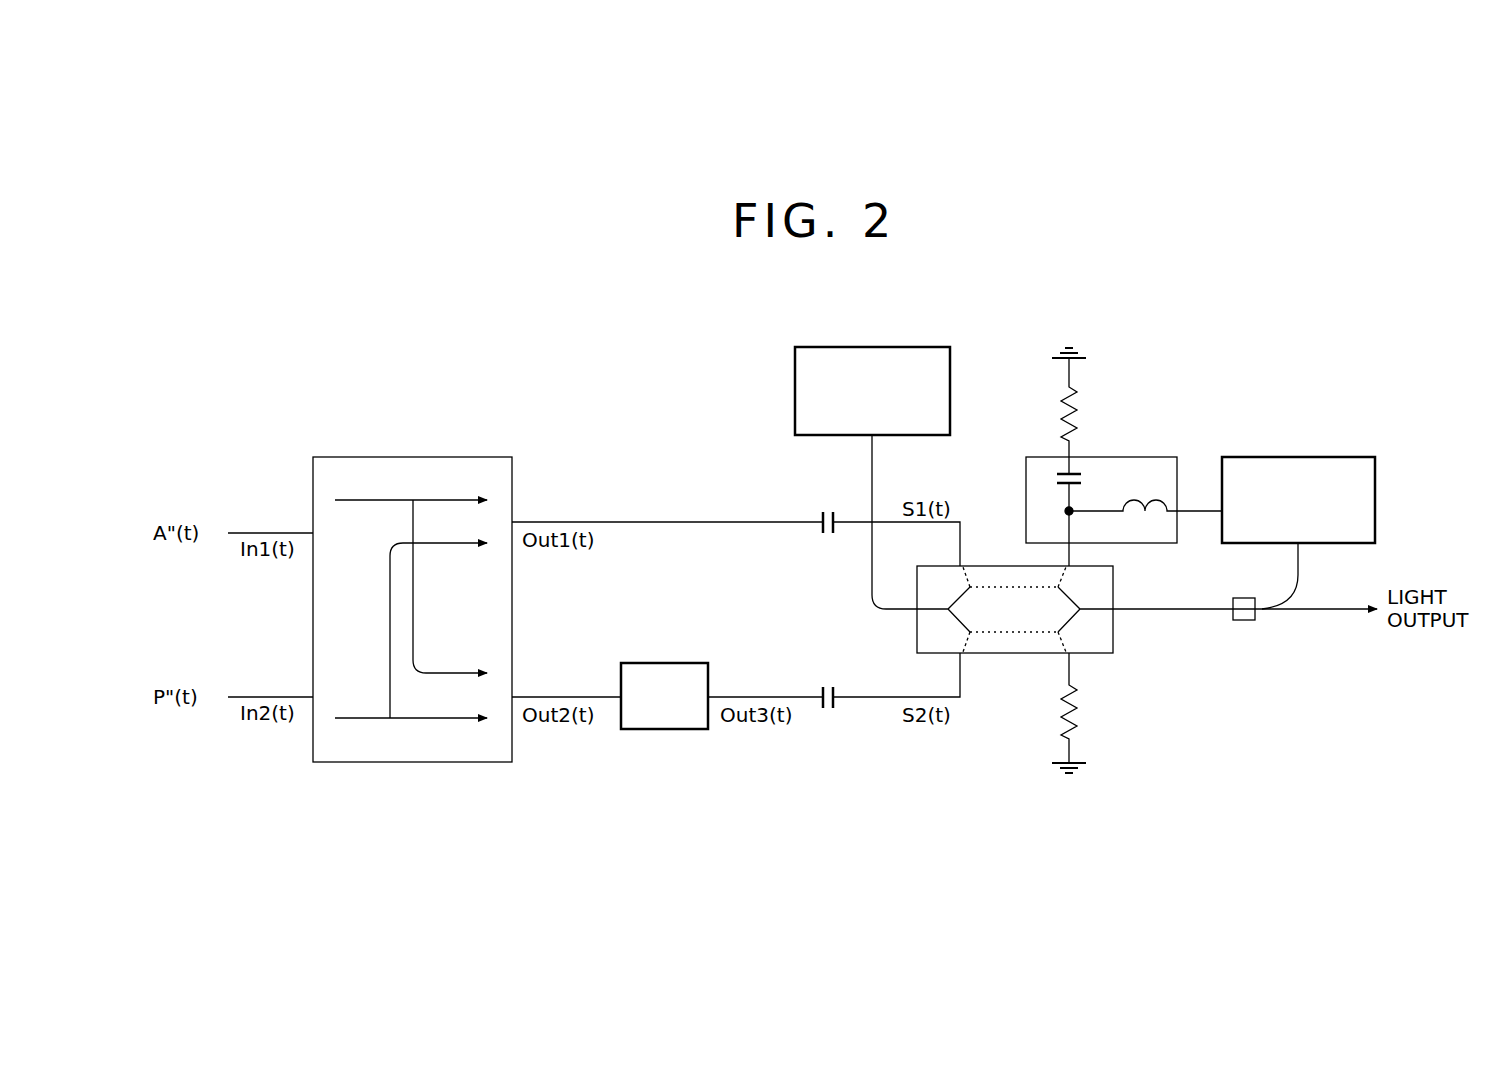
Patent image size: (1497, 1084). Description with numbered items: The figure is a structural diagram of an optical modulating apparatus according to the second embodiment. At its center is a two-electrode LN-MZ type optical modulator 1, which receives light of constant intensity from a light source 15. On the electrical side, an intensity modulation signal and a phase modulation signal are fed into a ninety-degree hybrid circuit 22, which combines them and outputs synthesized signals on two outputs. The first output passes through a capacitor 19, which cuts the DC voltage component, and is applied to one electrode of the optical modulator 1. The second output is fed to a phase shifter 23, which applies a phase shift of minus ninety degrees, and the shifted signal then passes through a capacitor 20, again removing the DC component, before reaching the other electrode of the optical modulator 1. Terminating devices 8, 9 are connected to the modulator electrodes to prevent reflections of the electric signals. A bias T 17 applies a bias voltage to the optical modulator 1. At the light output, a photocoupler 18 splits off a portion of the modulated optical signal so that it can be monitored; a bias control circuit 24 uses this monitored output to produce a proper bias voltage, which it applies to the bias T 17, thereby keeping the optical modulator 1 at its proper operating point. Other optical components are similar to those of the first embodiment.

The 2-electrode LN-MZ type optical modulator 1 is at (995, 565).
The terminating device 8 is at (1081, 395).
The terminating device 9 is at (1083, 705).
The light source 15 is at (905, 347).
The bias T 17 is at (1135, 457).
The photocoupler 18 is at (1242, 620).
The capacitor 19 is at (828, 536).
The capacitor 20 is at (828, 711).
The 90-degree hybrid circuit 22 is at (400, 457).
The phase shifter 23 is at (665, 663).
The bias control circuit 24 is at (1320, 457).